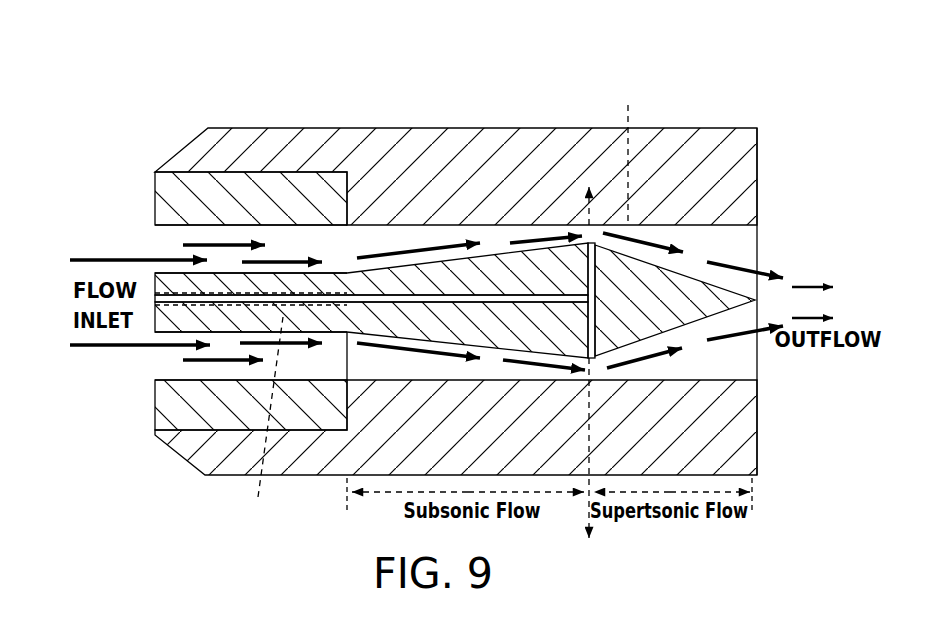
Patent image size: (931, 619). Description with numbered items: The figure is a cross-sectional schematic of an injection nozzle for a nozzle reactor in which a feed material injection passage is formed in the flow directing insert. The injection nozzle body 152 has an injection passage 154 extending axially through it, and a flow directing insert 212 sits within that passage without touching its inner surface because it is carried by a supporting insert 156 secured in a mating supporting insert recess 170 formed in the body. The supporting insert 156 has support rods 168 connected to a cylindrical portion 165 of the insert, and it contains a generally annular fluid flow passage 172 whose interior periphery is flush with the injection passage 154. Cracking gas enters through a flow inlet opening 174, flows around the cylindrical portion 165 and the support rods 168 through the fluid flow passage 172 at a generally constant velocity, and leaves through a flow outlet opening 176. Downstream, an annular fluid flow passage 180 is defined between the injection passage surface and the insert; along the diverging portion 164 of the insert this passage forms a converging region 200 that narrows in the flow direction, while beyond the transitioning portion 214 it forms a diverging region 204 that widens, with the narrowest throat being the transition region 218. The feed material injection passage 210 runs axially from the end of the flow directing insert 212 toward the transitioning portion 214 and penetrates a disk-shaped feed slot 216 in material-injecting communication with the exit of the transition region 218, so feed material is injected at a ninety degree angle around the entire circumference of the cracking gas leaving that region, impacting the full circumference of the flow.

The injection nozzle body 152 is at (693, 150).
The injection passage 154 is at (720, 225).
The supporting insert 156 is at (180, 208).
The diverging portion 164 is at (455, 330).
The cylindrical portion 165 is at (185, 378).
The support rods 168 is at (258, 421).
The supporting insert recess 170 is at (198, 432).
The fluid flow passage 172 is at (193, 227).
The flow inlet opening 174 is at (153, 358).
The flow outlet opening 176 is at (343, 347).
The annular fluid flow passage 180 is at (477, 370).
The converging region 200 is at (372, 243).
The diverging region 204 is at (690, 247).
The feed material injection passage 210 is at (398, 300).
The flow directing insert 212 is at (685, 330).
The transitioning portion 214 is at (590, 240).
The feed slot 216 is at (592, 343).
The transition region 218 is at (628, 149).